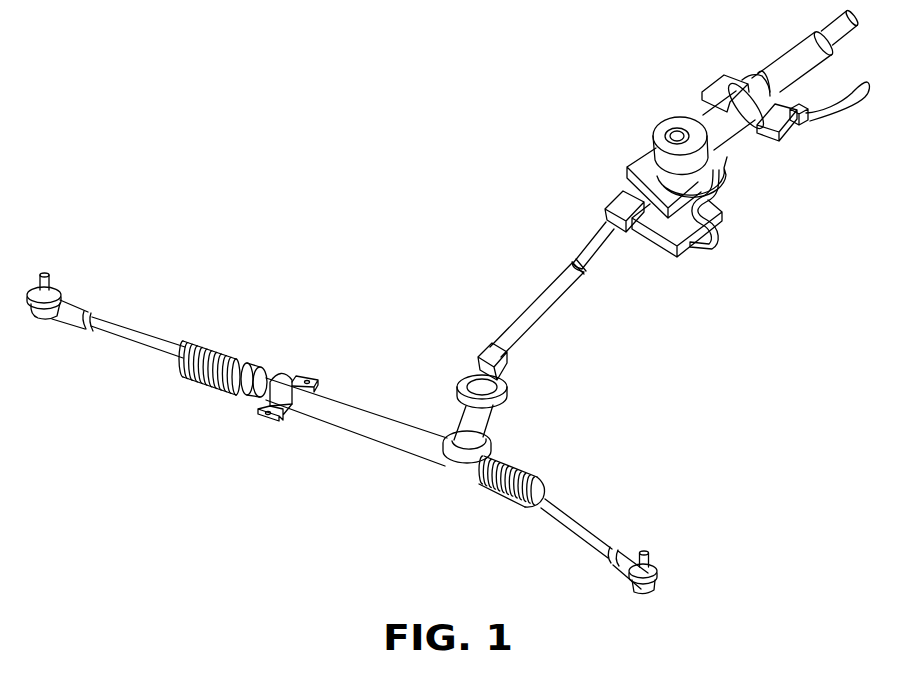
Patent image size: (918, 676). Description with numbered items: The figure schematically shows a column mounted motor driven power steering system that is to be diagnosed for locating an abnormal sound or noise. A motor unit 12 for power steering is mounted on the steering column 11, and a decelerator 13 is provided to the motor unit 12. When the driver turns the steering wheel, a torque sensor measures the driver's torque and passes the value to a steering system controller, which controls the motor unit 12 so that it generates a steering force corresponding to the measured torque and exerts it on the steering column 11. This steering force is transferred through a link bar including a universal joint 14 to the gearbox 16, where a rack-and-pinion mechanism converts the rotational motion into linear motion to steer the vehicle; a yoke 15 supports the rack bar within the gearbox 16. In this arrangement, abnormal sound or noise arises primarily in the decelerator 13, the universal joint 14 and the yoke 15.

The steering column 11 is at (733, 130).
The motor unit 12 is at (677, 128).
The decelerator 13 is at (637, 137).
The universal joint 14 is at (540, 270).
The yoke 15 is at (498, 428).
The gearbox 16 is at (348, 422).